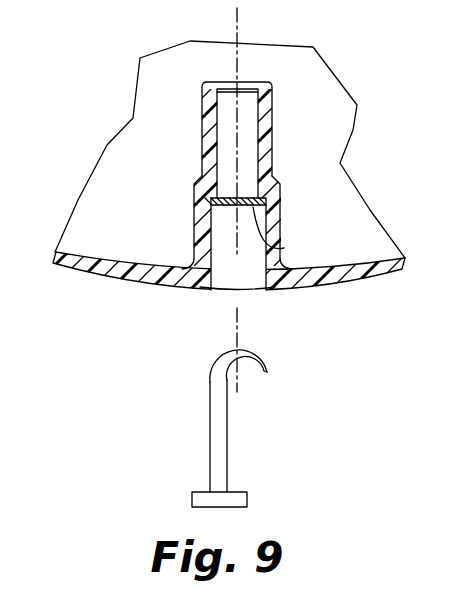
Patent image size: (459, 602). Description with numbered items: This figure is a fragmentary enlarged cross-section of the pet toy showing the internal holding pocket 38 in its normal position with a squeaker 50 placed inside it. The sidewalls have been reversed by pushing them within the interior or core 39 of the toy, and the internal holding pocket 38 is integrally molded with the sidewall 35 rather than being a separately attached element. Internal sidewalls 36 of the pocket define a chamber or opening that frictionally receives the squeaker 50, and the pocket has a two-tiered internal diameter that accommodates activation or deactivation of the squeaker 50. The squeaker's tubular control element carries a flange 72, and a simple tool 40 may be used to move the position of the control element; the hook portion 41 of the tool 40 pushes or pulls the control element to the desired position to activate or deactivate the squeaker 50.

The sidewall 35 is at (127, 277).
The internal sidewalls 36 is at (283, 210).
The internal holding pocket 38 is at (262, 308).
The core 39 is at (146, 216).
The tool 40 is at (210, 452).
The hook portion 41 is at (260, 372).
The squeaker 50 is at (243, 123).
The flange 72 is at (284, 248).